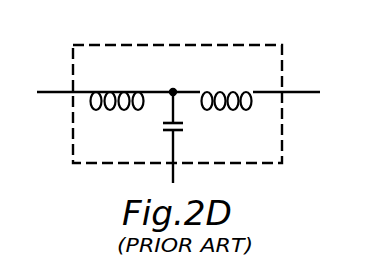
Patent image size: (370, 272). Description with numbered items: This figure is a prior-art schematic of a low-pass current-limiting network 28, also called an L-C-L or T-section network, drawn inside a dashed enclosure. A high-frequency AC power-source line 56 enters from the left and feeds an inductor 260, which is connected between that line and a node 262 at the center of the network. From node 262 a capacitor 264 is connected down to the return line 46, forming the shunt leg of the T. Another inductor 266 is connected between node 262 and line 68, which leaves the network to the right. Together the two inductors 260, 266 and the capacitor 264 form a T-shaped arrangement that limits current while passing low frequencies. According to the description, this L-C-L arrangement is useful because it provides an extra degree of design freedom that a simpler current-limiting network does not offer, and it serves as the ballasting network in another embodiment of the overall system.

The current-limiting network 28 is at (282, 120).
The return line 46 is at (172, 147).
The high-frequency AC power-source line 56 is at (59, 91).
The line 68 is at (302, 91).
The inductor 260 is at (133, 91).
The node 262 is at (173, 89).
The capacitor 264 is at (163, 127).
The inductor 266 is at (233, 110).